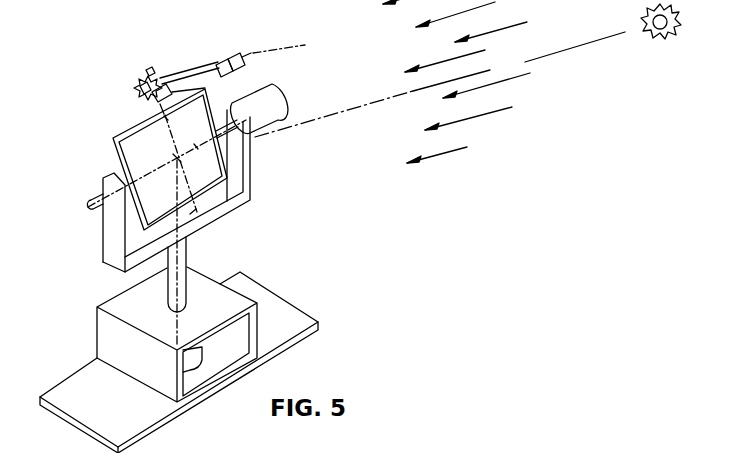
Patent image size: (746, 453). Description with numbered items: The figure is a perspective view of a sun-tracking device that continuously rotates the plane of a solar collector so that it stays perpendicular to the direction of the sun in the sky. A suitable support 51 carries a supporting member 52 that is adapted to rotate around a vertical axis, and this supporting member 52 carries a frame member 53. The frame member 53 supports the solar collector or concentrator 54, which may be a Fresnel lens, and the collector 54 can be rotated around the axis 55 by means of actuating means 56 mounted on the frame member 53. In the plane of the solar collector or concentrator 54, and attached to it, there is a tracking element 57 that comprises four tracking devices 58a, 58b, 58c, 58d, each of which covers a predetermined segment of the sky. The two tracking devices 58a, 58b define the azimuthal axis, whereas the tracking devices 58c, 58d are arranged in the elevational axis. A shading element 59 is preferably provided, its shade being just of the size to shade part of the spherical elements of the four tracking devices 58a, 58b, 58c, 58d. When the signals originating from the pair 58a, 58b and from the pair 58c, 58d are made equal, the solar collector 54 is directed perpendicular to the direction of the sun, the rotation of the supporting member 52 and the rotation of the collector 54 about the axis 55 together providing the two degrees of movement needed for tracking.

The support 51 is at (100, 334).
The supporting member 52 is at (182, 249).
The frame member 53 is at (251, 167).
The solar collector or concentrator 54 is at (137, 148).
The axis 55 is at (90, 205).
The actuating means 56 is at (289, 103).
The tracking element 57 is at (163, 63).
The tracking device 58a is at (140, 90).
The tracking device 58b is at (174, 73).
The tracking device 58c is at (207, 91).
The tracking device 58d is at (150, 67).
The shading element 59 is at (238, 50).